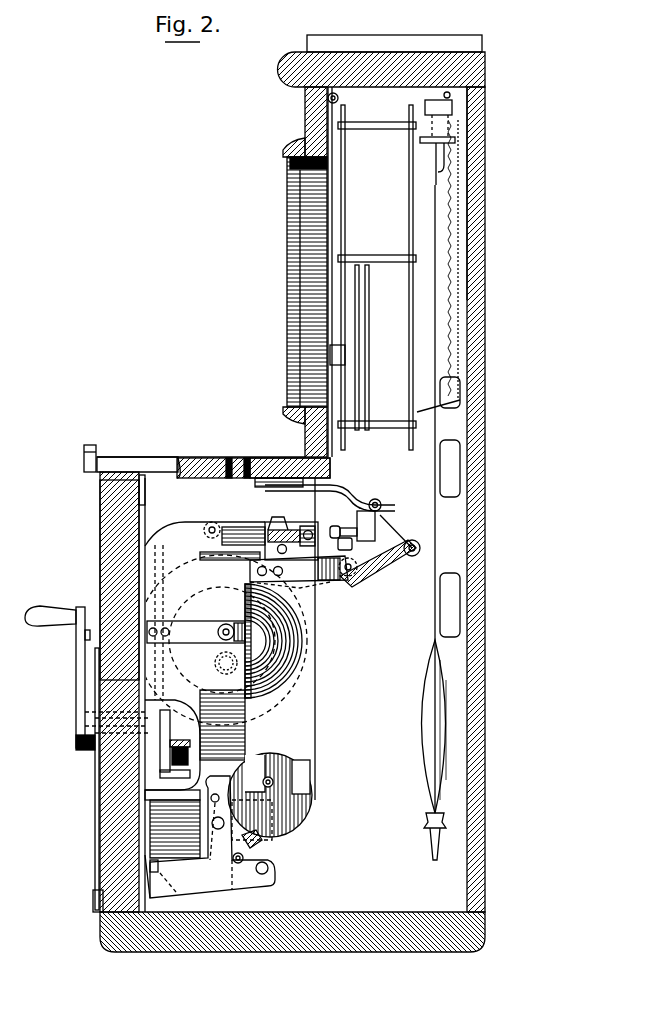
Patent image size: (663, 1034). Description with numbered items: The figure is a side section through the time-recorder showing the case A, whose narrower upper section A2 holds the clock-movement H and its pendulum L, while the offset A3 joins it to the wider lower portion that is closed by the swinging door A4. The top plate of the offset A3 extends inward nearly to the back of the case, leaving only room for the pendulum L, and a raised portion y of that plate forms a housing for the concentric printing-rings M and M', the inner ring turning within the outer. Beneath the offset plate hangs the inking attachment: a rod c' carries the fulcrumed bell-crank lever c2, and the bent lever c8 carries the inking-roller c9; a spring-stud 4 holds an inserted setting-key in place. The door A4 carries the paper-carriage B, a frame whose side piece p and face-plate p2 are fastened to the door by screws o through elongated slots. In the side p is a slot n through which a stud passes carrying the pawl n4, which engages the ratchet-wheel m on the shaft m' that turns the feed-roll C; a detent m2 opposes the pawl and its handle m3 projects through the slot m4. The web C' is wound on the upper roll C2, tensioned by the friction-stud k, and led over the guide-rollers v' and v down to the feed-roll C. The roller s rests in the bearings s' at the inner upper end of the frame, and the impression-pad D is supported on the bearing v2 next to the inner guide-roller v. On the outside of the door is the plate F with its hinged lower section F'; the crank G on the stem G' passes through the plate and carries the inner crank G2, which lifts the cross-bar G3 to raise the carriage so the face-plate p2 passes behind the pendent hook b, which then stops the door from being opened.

The case A is at (305, 940).
The upper section of the case A2 is at (475, 182).
The offset A3 is at (201, 448).
The door A4 is at (110, 552).
The spring-stud 4 is at (92, 446).
The pendent hook b is at (139, 492).
The printing-ring M is at (253, 451).
The inner printing-ring M' is at (289, 451).
The raised portion of top plate y is at (185, 458).
The clock-movement H is at (394, 272).
The clock-pendulum L is at (432, 612).
The paper-carriage B is at (230, 695).
The face-plate p2 is at (158, 540).
The screws o is at (158, 580).
The inking-roller c9 is at (282, 488).
The bent lever c8 is at (338, 488).
The impression-pad D is at (300, 524).
The bearing v2 is at (270, 522).
The front guide-roller v' is at (214, 515).
The inner guide-roller v is at (265, 535).
The bearings s' is at (303, 583).
The roller s is at (338, 547).
The bell-crank lever c2 is at (382, 573).
The rod c' is at (405, 571).
The upper roll C2 is at (262, 637).
The web C' is at (297, 649).
The friction-stud k is at (218, 668).
The crank G2 is at (175, 743).
The cross-bar G3 is at (192, 748).
The feed-roll C is at (287, 783).
The ratchet-wheel m is at (324, 777).
The shaft m' is at (313, 786).
The slot n is at (232, 880).
The handle m3 is at (257, 838).
The slot m4 is at (240, 842).
The side piece p is at (274, 848).
The detent m2 is at (278, 877).
The plate F is at (126, 779).
The lower section of plate F' is at (76, 896).
The pawl n4 is at (148, 787).
The crank G is at (60, 678).
The stem G' is at (85, 732).